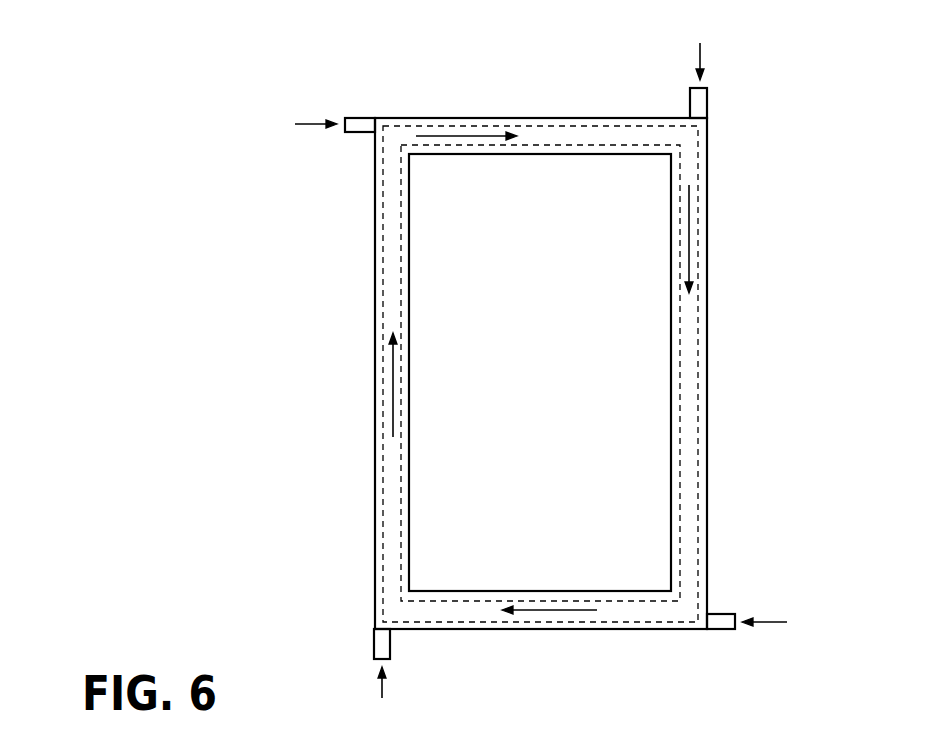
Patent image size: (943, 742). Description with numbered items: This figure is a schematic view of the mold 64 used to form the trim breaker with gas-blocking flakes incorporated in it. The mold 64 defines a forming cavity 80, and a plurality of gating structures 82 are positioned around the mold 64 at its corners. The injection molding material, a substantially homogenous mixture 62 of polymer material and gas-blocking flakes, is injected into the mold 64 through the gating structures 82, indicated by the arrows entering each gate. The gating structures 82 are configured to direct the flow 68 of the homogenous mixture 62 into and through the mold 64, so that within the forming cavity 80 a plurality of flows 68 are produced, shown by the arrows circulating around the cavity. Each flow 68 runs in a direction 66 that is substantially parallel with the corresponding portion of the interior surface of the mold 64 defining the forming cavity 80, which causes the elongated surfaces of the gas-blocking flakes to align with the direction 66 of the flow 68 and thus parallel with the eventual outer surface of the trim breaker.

The homogenous mixture 62 is at (306, 133).
The mold 64 is at (353, 432).
The direction 66 is at (465, 136).
The flow 68 is at (321, 118).
The forming cavity 80 is at (686, 460).
The gating structures 82 is at (362, 125).